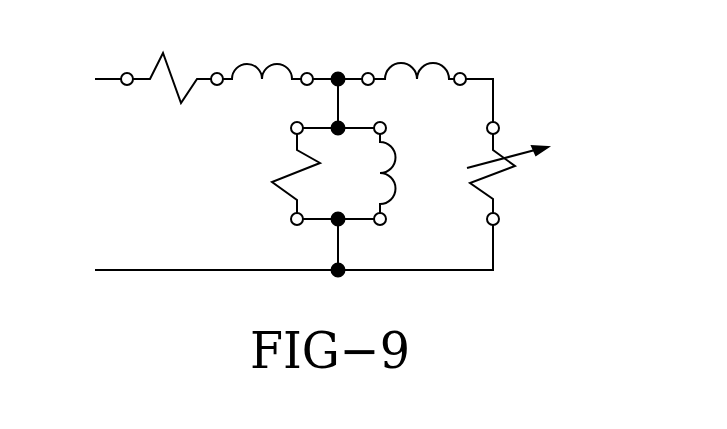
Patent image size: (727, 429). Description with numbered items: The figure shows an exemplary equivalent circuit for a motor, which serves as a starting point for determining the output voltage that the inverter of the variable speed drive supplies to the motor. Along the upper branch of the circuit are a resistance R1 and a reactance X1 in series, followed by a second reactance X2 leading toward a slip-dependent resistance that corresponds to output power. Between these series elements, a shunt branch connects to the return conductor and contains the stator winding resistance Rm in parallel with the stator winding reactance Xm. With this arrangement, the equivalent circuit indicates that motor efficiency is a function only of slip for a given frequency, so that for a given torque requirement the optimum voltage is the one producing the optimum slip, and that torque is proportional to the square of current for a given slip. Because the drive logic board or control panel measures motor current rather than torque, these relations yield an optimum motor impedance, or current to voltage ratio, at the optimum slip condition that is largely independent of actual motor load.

The resistance R1 is at (172, 63).
The reactance X1 is at (262, 56).
The reactance X2 is at (414, 56).
The stator winding resistance Rm is at (276, 173).
The stator winding reactance Xm is at (406, 173).